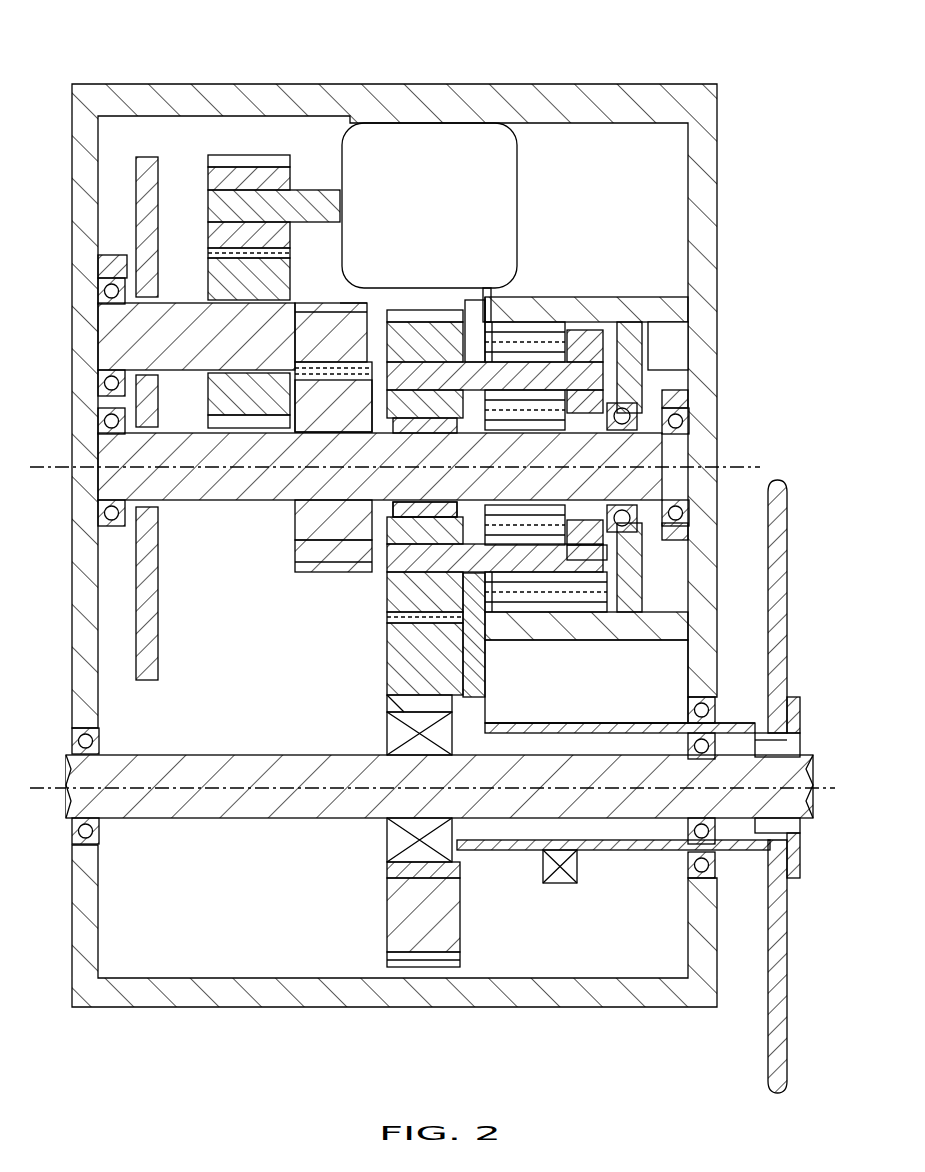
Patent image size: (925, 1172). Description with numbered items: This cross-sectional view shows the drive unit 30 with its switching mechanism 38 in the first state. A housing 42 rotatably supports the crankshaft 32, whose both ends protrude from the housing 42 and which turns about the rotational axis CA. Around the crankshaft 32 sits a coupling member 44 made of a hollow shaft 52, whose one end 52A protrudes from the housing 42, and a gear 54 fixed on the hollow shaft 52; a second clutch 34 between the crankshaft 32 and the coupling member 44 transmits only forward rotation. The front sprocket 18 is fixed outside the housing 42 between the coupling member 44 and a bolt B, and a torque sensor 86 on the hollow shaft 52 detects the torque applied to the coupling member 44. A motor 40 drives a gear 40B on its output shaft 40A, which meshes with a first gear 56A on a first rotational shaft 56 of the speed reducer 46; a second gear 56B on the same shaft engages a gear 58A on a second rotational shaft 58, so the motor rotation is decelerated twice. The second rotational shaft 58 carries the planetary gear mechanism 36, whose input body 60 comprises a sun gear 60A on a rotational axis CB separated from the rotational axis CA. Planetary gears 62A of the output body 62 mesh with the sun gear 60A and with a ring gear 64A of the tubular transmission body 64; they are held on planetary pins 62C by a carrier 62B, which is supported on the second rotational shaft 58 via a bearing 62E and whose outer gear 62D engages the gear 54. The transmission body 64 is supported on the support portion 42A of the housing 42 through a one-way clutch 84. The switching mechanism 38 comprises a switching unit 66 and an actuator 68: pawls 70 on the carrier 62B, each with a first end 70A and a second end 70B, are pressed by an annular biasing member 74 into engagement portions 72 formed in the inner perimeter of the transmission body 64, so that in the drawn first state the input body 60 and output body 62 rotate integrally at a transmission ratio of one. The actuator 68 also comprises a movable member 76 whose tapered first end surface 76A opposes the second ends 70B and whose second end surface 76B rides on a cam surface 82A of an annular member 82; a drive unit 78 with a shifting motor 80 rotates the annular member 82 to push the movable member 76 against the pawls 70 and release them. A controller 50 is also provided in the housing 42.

The drive unit 30 is at (746, 59).
The housing 42 is at (706, 158).
The support portion 42A is at (520, 300).
The motor 40 is at (517, 172).
The output shaft 40A is at (325, 190).
The gear 40B is at (232, 167).
The planetary gear mechanism 36 is at (544, 294).
The switching unit 66 is at (581, 295).
The switching mechanism 38 is at (620, 294).
The actuator 68 is at (662, 295).
The speed reducer 46 is at (196, 295).
The first rotational shaft 56 is at (98, 332).
The first gear 56A is at (290, 252).
The second gear 56B is at (345, 303).
The output body 62 is at (387, 617).
The planetary gears 62A is at (555, 612).
The carrier 62B is at (387, 592).
The planetary pins 62C is at (390, 322).
The gear 62D is at (390, 640).
The bearing 62E is at (410, 505).
The transmission body 64 is at (470, 300).
The ring gear 64A is at (497, 612).
The one-way clutch 84 is at (487, 296).
The shifting motor 80 is at (698, 325).
The drive unit 78 is at (740, 363).
The annular member 82 is at (690, 381).
The cam surface 82A is at (690, 415).
The input body 60 is at (485, 426).
The sun gear 60A is at (522, 430).
The biasing member 74 is at (586, 414).
The movable member 76 is at (632, 432).
The first end surface 76A is at (640, 572).
The second end surface 76B is at (690, 500).
The second rotational shaft 58 is at (208, 500).
The gear 58A is at (295, 558).
The pawls 70 is at (575, 505).
The first end 70A is at (645, 600).
The second end 70B is at (621, 506).
The engagement portions 72 is at (605, 582).
The controller 50 is at (158, 626).
The hollow shaft 52 is at (516, 723).
The one end 52A is at (737, 722).
The coupling member 44 is at (588, 723).
The second clutch 34 is at (387, 728).
The gear 54 is at (387, 952).
The torque sensor 86 is at (560, 884).
The crankshaft 32 is at (810, 820).
The front sprocket 18 is at (787, 548).
The bolt B is at (797, 697).
The rotational axis of the crankshaft CA is at (48, 792).
The rotational axis of the input body CB is at (48, 470).